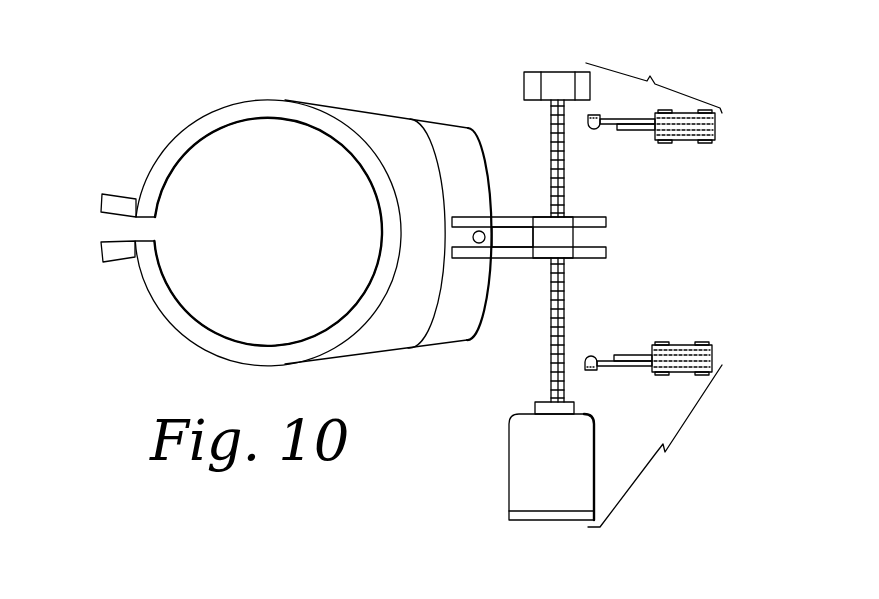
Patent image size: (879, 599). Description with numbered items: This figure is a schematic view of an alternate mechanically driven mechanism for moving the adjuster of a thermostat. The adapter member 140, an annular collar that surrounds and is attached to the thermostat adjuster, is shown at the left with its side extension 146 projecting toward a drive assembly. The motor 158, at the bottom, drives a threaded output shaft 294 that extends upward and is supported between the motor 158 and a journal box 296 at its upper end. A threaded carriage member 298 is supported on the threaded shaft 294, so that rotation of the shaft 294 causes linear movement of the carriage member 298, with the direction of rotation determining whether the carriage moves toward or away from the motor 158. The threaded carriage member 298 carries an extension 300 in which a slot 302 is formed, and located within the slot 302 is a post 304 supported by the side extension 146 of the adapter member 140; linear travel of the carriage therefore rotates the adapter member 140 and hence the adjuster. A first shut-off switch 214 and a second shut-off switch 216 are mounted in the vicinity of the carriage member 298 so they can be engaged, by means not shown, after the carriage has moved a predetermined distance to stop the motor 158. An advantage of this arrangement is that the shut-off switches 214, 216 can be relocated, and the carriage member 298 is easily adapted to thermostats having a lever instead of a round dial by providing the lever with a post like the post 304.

The adapter member 140 is at (250, 108).
The side extension 146 is at (401, 115).
The motor 158 is at (530, 427).
The first shut-off switch 214 is at (688, 146).
The second shut-off switch 216 is at (694, 331).
The threaded output shaft 294 is at (566, 181).
The journal box 296 is at (552, 82).
The threaded carriage member 298 is at (548, 232).
The extension 300 is at (452, 219).
The slot 302 is at (517, 247).
The post 304 is at (473, 237).